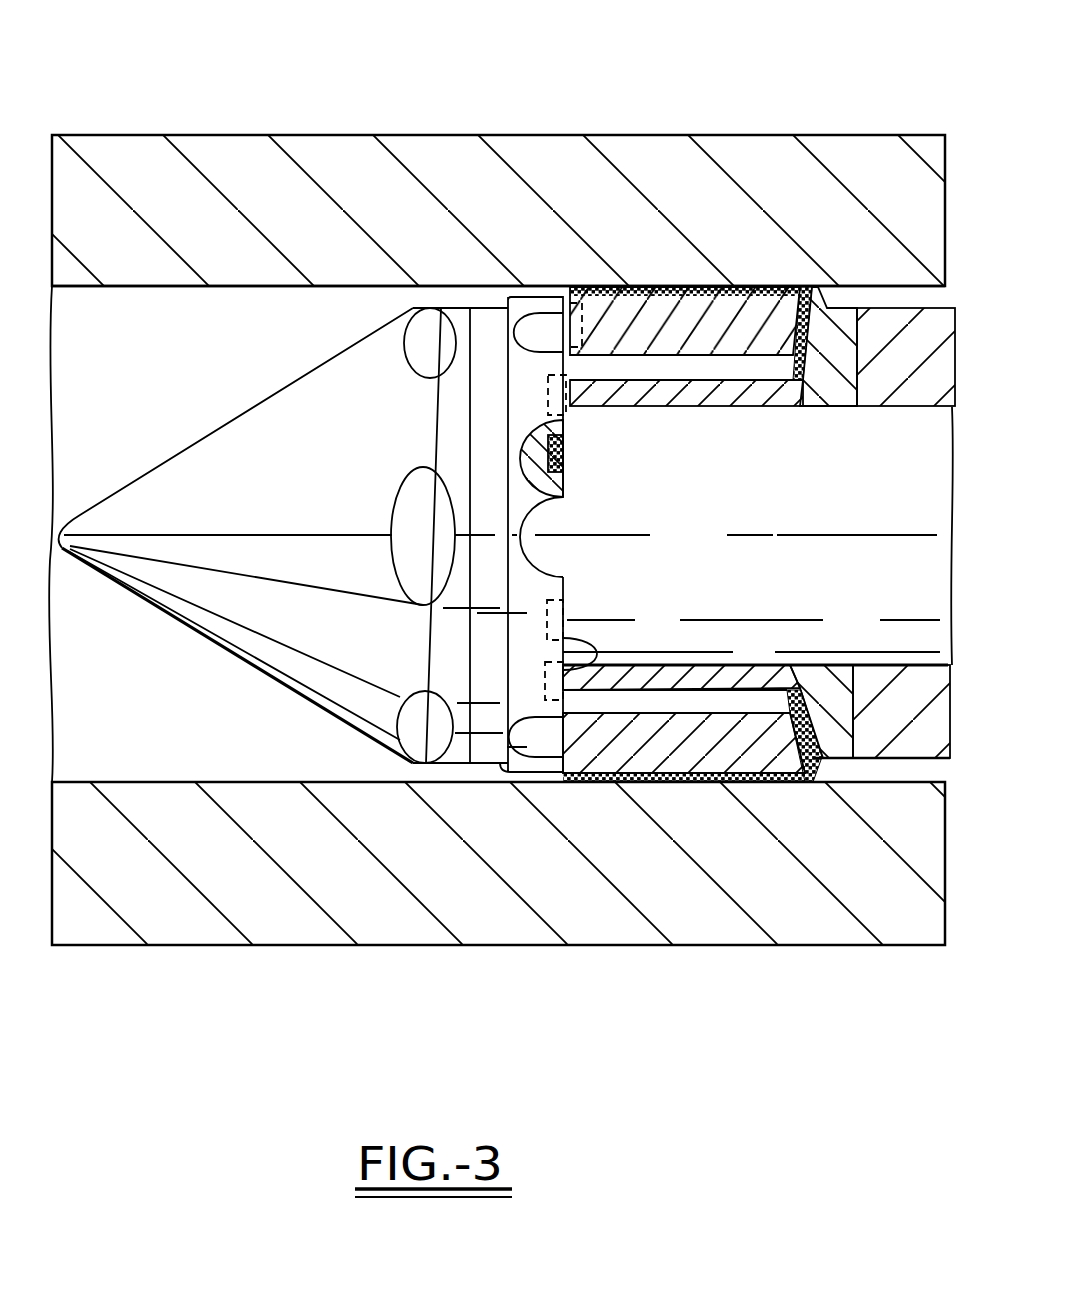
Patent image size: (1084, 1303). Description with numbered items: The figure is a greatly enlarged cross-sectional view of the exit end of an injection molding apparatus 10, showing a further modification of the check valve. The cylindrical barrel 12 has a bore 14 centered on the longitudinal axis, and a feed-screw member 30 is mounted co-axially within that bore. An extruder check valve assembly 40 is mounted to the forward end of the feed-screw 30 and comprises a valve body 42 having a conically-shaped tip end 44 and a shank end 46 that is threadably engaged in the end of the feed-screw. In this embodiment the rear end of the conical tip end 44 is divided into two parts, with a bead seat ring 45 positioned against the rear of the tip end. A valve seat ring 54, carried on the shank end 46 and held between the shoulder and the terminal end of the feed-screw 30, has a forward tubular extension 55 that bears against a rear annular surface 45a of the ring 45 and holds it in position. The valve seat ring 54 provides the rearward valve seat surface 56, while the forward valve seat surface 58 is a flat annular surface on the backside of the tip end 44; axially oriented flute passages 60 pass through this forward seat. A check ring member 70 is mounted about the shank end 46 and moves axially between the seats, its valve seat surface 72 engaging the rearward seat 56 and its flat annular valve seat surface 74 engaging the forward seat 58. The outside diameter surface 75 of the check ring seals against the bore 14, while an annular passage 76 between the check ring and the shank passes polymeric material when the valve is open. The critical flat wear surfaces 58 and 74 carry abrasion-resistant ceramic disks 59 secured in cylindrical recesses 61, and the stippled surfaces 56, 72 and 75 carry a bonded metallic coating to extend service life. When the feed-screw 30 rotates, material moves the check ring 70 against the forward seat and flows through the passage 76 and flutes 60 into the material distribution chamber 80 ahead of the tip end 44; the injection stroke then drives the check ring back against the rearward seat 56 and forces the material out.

The injection molding apparatus 10 is at (405, 128).
The barrel 12 is at (237, 135).
The bore 14 is at (174, 288).
The feed-screw member 30 is at (916, 296).
The extruder check valve assembly 40 is at (296, 711).
The valve body 42 is at (285, 397).
The conically-shaped tip end 44 is at (220, 430).
The bead seat ring 45 is at (487, 418).
The rear annular surface 45a is at (528, 640).
The shank end 46 is at (712, 541).
The valve seat ring 54 is at (850, 762).
The forward tubular extension 55 is at (613, 673).
The rearward valve seat surface 56 is at (836, 305).
The forward valve seat surface 58 is at (576, 298).
The ceramic disks 59 is at (548, 392).
The flute passages 60 is at (522, 293).
The cylindrical recesses 61 is at (540, 322).
The check ring member 70 is at (668, 800).
The check ring valve seat surface 72 is at (821, 300).
The check ring valve seat surface 74 is at (563, 335).
The outside diameter surface 75 is at (645, 288).
The annular passage 76 is at (720, 370).
The material distribution chamber 80 is at (124, 640).